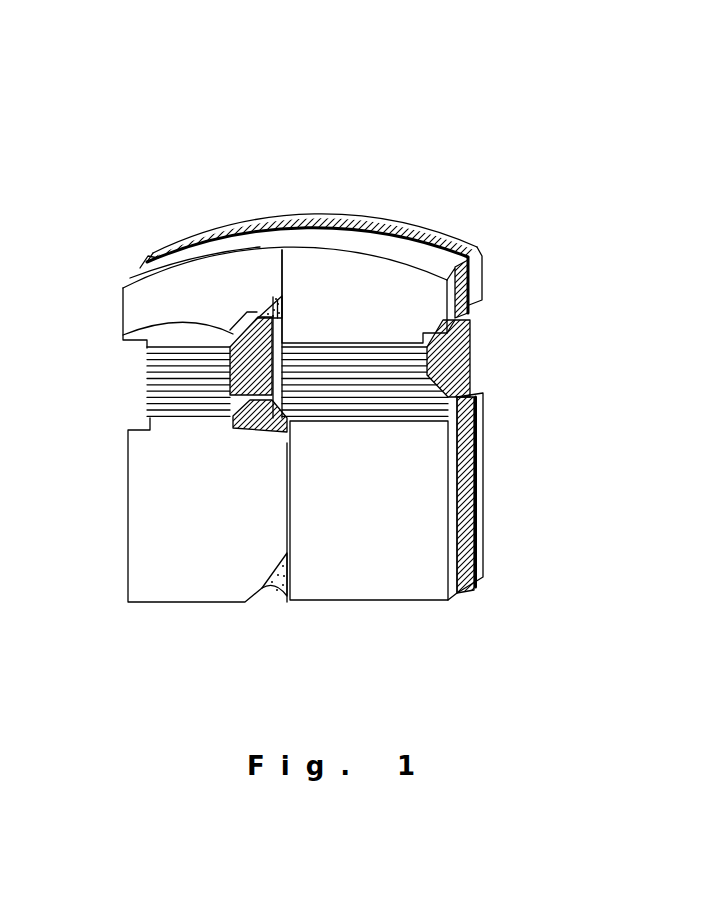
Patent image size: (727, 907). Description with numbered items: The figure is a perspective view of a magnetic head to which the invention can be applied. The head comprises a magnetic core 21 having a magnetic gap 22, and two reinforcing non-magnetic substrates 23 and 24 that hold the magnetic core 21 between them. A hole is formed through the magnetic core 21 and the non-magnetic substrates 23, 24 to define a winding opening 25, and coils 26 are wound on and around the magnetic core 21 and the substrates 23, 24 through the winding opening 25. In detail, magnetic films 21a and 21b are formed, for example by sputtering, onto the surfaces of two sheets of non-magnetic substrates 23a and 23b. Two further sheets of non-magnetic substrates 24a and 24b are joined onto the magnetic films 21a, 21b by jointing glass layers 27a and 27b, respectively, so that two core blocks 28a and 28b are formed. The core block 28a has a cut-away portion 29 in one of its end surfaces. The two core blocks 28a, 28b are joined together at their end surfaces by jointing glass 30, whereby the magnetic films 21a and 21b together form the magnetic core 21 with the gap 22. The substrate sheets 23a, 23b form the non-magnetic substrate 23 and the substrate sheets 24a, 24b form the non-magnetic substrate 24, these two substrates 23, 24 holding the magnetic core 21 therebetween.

The magnetic core 21 is at (420, 240).
The magnetic film 21a is at (153, 264).
The magnetic film 21b is at (347, 214).
The magnetic gap 22 is at (281, 225).
The non-magnetic substrate 23 is at (428, 303).
The non-magnetic substrate 23a is at (190, 590).
The non-magnetic substrate 23b is at (417, 588).
The non-magnetic substrate 24 is at (377, 217).
The non-magnetic substrate 24a is at (180, 243).
The non-magnetic substrate 24b is at (460, 247).
The winding opening 25 is at (277, 292).
The coils 26 is at (470, 345).
The jointing glass layer 27a is at (262, 312).
The jointing glass layer 27b is at (487, 515).
The core block 28a is at (121, 570).
The core block 28b is at (490, 459).
The cut-away portion 29 is at (123, 335).
The jointing glass 30 is at (268, 300).